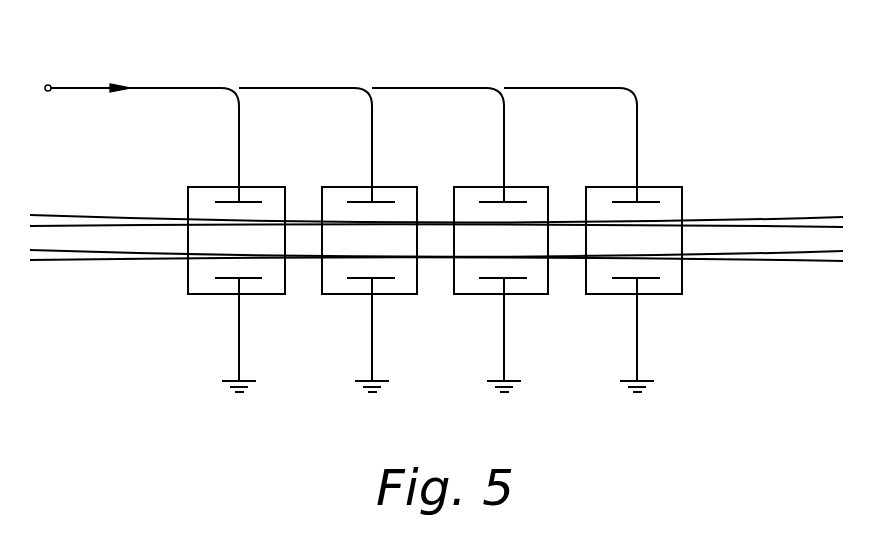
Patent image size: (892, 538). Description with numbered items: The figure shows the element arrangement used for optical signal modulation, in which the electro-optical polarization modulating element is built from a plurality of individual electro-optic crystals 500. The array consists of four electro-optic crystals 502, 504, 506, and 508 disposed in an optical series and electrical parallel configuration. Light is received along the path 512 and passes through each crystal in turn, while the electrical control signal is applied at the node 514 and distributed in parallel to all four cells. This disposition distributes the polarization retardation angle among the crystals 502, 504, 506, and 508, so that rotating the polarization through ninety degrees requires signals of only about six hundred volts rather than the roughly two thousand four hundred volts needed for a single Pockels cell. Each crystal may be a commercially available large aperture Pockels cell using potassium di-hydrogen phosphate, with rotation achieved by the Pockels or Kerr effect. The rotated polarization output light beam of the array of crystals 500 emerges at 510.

The electro-optic crystals 500 is at (430, 60).
The electro-optic crystal 502 is at (197, 295).
The electro-optic crystal 504 is at (337, 295).
The electro-optic crystal 506 is at (482, 295).
The electro-optic crystal 508 is at (619, 295).
The rotated polarization output light beam 510 is at (102, 261).
The path 512 is at (757, 222).
The node 514 is at (48, 85).